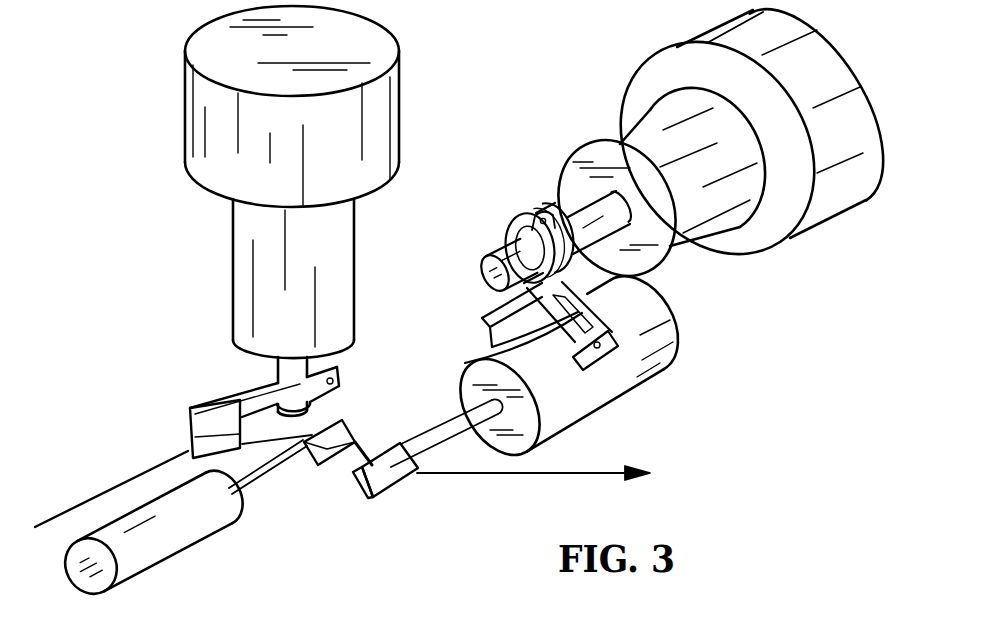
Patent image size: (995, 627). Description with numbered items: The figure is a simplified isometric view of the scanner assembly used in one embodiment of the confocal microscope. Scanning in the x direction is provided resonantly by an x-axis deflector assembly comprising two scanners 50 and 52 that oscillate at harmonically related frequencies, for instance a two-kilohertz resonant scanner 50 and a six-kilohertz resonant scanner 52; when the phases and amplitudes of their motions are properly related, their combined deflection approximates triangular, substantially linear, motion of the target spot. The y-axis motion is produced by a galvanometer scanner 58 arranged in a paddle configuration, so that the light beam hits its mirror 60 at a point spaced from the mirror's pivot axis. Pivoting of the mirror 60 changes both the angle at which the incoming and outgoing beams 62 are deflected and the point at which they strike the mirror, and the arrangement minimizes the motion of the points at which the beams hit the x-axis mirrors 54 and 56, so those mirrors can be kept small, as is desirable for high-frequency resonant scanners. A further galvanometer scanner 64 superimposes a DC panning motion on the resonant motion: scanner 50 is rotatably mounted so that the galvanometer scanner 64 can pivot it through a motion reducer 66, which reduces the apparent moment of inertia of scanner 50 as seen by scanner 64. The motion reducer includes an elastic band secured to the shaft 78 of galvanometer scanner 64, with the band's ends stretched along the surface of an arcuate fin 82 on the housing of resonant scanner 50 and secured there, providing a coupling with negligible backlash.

The resonant scanner 50 is at (663, 342).
The resonant scanner 52 is at (180, 535).
The x-axis mirror 54 is at (390, 493).
The x-axis mirror 56 is at (350, 430).
The galvanometer scanner 58 is at (383, 110).
The mirror 60 is at (190, 432).
The incoming and outgoing beams 62 is at (127, 477).
The galvanometer scanner 64 is at (830, 199).
The motion reducer 66 is at (603, 310).
The shaft 78 is at (578, 213).
The arcuate fin 82 is at (477, 335).